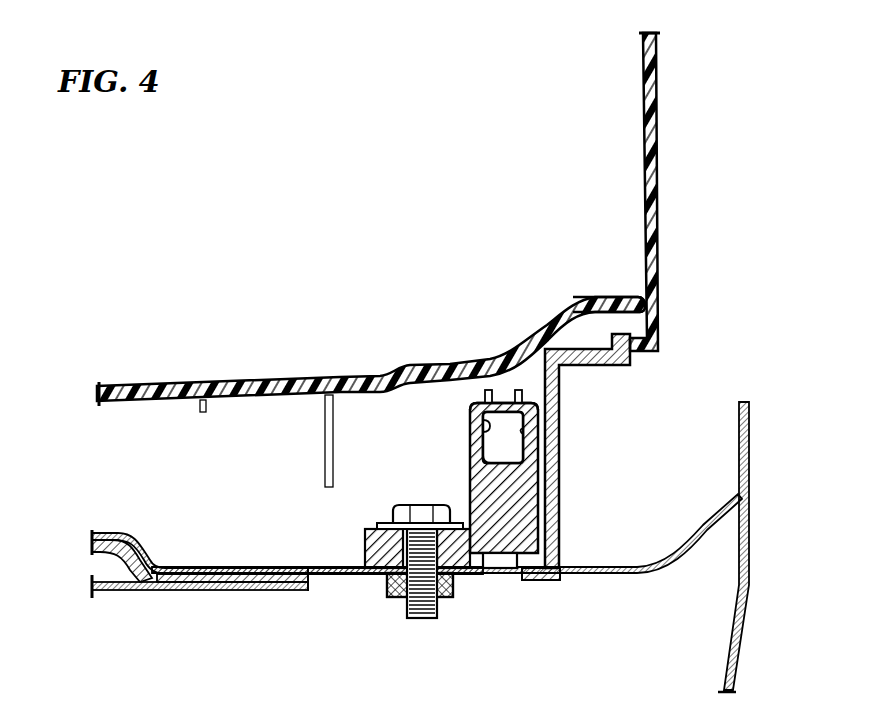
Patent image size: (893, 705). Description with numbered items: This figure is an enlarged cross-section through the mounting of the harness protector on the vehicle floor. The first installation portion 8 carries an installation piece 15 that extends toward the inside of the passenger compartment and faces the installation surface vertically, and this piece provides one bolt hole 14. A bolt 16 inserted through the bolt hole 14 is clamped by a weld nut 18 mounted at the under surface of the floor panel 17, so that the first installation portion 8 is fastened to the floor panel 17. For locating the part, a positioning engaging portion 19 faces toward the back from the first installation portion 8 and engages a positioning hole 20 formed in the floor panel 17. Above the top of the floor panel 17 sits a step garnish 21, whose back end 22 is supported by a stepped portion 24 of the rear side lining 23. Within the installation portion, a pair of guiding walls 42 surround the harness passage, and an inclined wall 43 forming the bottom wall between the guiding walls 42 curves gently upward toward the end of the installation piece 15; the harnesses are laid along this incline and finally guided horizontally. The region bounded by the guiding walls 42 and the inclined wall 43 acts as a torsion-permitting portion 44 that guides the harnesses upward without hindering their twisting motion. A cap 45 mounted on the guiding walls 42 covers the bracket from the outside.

The first installation portion 8 is at (470, 458).
The bolt hole 14 is at (437, 550).
The installation piece 15 is at (380, 563).
The bolt 16 is at (392, 508).
The floor panel 17 is at (632, 575).
The weld nut 18 is at (390, 598).
The positioning engaging portion 19 is at (540, 582).
The positioning hole 20 is at (484, 572).
The step garnish 21 is at (353, 377).
The back end of step garnish 22 is at (603, 296).
The rear side lining 23 is at (657, 170).
The stepped portion 24 is at (600, 366).
The guiding walls 42 is at (482, 426).
The inclined wall 43 is at (505, 460).
The torsion-permitting portion 44 is at (507, 423).
The cap 45 is at (473, 403).